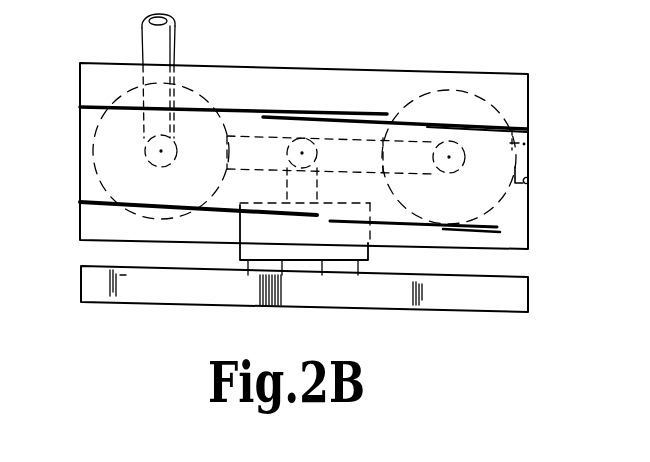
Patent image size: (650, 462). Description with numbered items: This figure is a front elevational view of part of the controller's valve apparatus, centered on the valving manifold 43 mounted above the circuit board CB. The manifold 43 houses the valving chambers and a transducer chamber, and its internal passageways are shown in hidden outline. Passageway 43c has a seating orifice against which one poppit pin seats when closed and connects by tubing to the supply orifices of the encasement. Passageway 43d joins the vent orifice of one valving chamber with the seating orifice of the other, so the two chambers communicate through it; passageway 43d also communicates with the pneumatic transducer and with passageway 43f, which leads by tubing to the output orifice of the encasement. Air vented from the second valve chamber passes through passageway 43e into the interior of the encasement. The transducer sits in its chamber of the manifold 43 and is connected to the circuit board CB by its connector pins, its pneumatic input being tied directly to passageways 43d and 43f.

The valving manifold 43 is at (516, 74).
The passageway 43c is at (183, 78).
The passageway 43d is at (365, 140).
The passageway 43e is at (531, 184).
The passageway 43f is at (320, 137).
The circuit board CB is at (522, 313).